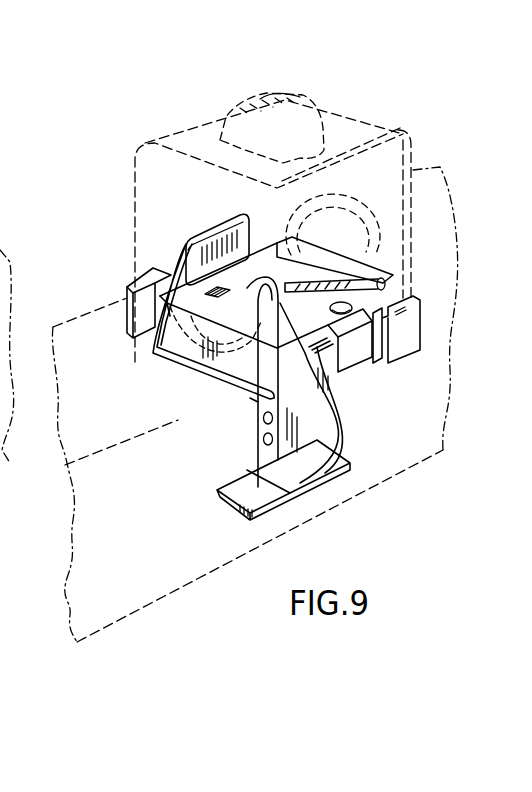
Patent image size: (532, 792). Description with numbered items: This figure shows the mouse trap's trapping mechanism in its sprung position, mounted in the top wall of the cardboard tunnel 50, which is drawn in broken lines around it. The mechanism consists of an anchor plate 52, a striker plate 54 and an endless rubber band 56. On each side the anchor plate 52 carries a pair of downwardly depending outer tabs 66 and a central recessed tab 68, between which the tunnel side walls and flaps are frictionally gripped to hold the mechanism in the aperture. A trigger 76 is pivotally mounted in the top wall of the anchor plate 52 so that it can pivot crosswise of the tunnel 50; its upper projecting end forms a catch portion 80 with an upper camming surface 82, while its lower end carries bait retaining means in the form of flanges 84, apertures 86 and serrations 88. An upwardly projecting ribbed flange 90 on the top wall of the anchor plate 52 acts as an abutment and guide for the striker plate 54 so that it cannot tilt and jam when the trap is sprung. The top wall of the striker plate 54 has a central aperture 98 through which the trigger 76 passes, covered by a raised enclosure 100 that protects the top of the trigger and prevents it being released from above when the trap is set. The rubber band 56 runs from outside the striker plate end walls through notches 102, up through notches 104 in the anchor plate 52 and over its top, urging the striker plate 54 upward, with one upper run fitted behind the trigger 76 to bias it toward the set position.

The cardboard tunnel 50 is at (155, 567).
The anchor plate 52 is at (124, 286).
The striker plate 54 is at (14, 375).
The endless rubber band 56 is at (135, 175).
The outer tabs 66 is at (127, 309).
The central recessed tab 68 is at (357, 360).
The trigger 76 is at (284, 302).
The catch portion 80 is at (288, 266).
The upper camming surface 82 is at (290, 245).
The flanges 84 is at (243, 478).
The apertures 86 is at (259, 440).
The serrations 88 is at (243, 402).
The ribbed flange 90 is at (215, 230).
The central aperture 98 is at (340, 215).
The raised enclosure 100 is at (240, 124).
The notches 102 is at (150, 378).
The notches 104 is at (160, 285).